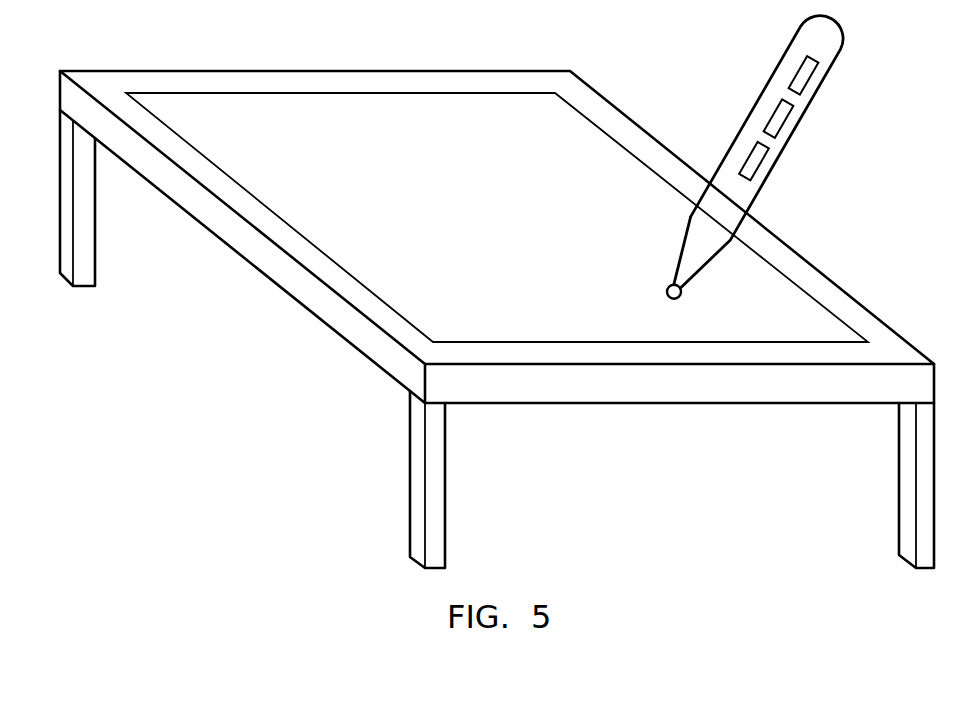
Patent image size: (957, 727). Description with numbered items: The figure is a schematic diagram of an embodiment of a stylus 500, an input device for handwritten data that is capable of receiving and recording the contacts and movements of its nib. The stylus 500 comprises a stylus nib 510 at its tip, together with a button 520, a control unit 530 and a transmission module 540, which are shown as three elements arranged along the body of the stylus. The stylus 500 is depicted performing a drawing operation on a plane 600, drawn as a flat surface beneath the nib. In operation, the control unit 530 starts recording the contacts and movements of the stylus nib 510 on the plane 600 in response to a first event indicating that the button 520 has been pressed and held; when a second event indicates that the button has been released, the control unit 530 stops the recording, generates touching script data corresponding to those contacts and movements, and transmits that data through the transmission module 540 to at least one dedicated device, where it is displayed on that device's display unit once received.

The stylus 500 is at (812, 226).
The stylus nib 510 is at (675, 297).
The button 520 is at (807, 75).
The control unit 530 is at (782, 117).
The transmission module 540 is at (757, 160).
The plane 600 is at (328, 257).